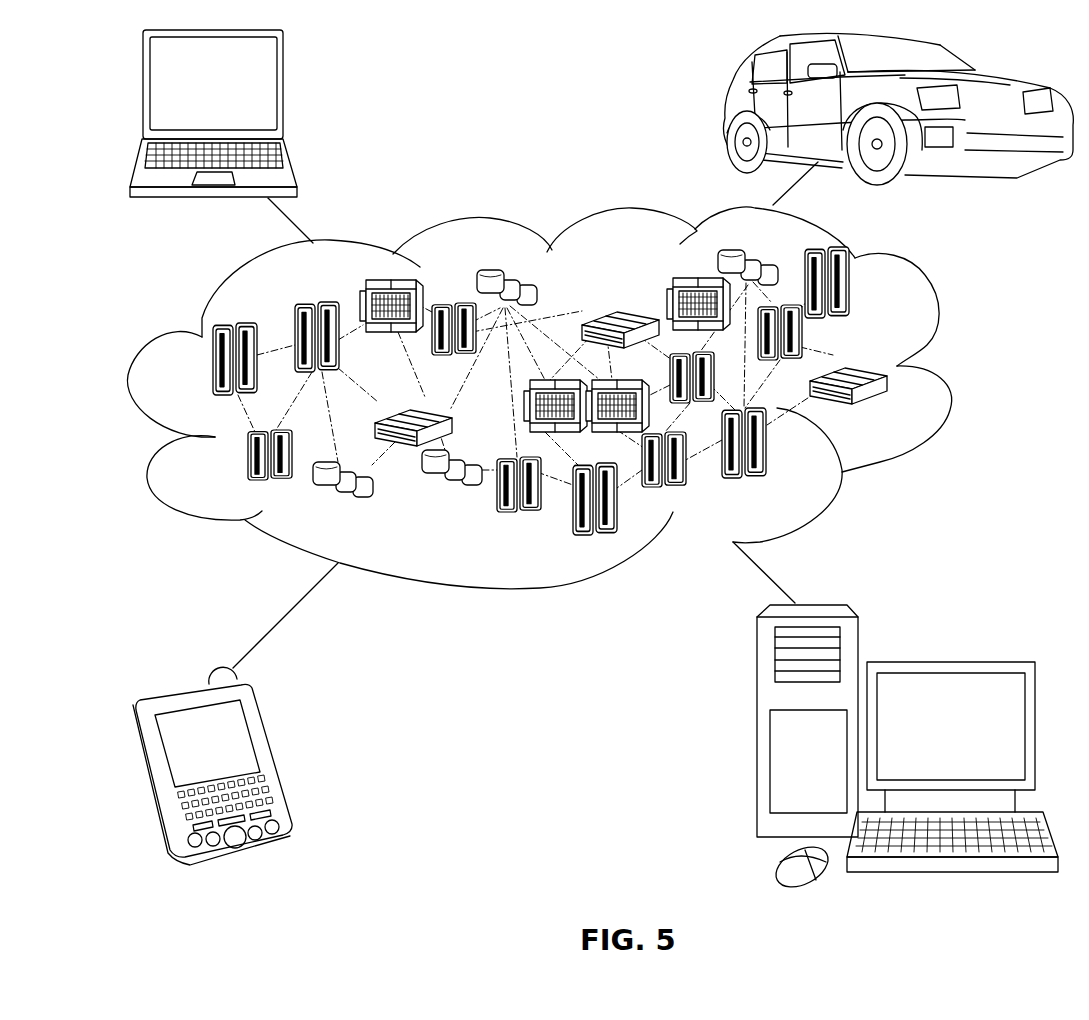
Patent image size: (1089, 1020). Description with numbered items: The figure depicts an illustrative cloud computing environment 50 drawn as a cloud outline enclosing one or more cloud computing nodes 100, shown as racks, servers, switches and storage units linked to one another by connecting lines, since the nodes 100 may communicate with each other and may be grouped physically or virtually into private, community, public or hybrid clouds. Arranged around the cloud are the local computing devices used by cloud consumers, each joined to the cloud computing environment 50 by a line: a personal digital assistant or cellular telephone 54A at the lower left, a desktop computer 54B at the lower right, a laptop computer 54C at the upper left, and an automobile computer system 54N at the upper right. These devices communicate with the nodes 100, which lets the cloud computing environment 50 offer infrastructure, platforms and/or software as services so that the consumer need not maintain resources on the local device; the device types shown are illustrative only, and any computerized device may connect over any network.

The cloud computing environment 50 is at (948, 368).
The cloud computing nodes 100 is at (890, 400).
The personal digital assistant or cellular telephone 54A is at (273, 757).
The desktop computer 54B is at (947, 662).
The laptop computer 54C is at (283, 92).
The automobile computer system 54N is at (725, 108).